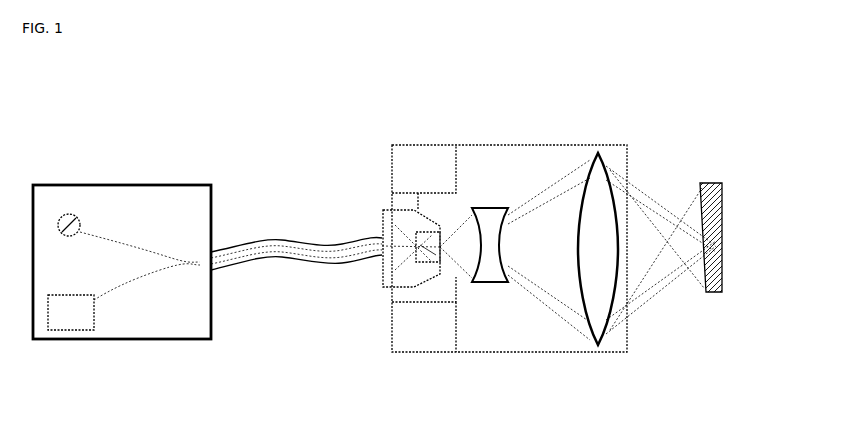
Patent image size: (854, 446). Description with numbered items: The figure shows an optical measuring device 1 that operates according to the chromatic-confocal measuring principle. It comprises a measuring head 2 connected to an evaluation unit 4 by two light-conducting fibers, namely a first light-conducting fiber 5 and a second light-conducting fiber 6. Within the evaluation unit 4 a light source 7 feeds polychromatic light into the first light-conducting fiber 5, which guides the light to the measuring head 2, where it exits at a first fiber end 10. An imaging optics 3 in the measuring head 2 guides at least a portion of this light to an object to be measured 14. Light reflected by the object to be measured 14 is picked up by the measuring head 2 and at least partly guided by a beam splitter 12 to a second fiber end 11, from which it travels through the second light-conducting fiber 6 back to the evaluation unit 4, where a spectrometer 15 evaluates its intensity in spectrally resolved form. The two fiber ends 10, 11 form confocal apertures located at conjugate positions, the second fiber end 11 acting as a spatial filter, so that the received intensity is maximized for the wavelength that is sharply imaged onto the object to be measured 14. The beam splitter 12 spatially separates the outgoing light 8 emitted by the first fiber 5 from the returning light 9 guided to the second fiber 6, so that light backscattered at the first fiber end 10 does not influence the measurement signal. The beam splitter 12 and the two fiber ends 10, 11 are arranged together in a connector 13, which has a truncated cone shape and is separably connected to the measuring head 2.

The optical measuring device 1 is at (97, 127).
The measuring head 2 is at (463, 141).
The imaging optics 3 is at (543, 163).
The evaluation unit 4 is at (110, 340).
The first light-conducting fiber 5 is at (297, 240).
The second light-conducting fiber 6 is at (318, 262).
The light source 7 is at (83, 206).
The light emitted by the first fiber 8 is at (387, 208).
The light returning from the object 9 is at (392, 297).
The first fiber end 10 is at (380, 236).
The second fiber end 11 is at (386, 279).
The beam splitter 12 is at (447, 263).
The connector 13 is at (458, 292).
The object to be measured 14 is at (718, 178).
The spectrometer 15 is at (64, 331).